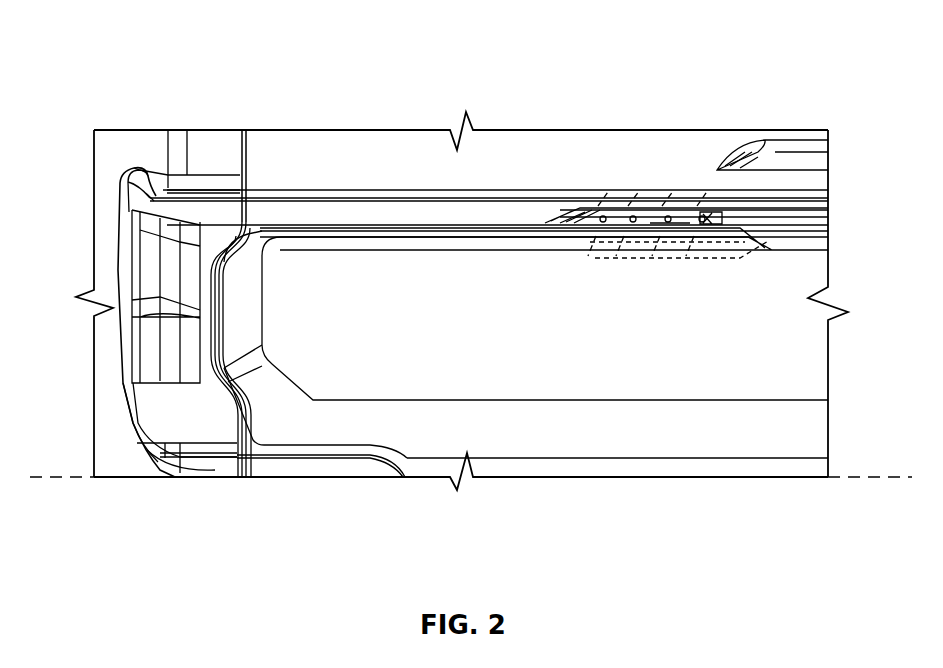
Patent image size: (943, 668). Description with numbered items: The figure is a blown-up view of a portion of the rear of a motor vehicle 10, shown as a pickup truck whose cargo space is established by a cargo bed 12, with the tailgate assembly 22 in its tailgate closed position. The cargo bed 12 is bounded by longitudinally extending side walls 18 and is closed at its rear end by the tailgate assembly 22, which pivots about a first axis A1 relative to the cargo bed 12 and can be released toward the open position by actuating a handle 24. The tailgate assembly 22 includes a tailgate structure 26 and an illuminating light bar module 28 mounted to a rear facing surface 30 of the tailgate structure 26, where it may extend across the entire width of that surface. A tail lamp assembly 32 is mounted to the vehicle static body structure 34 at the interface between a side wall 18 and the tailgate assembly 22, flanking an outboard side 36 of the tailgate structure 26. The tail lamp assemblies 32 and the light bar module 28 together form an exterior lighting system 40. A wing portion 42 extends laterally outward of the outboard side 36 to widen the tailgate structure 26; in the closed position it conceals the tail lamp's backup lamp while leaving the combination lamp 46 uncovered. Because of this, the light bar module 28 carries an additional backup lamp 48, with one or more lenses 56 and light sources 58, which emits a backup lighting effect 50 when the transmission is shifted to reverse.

The motor vehicle 10 is at (778, 80).
The cargo bed 12 is at (622, 115).
The side walls 18 is at (160, 140).
The tailgate assembly 22 is at (429, 431).
The handle 24 is at (802, 160).
The tailgate structure 26 is at (462, 337).
The illuminating light bar module 28 is at (371, 212).
The rear facing surface 30 is at (635, 355).
The tail lamp assembly 32 is at (113, 228).
The vehicle static body structure 34 is at (92, 352).
The outboard side 36 is at (231, 428).
The exterior lighting system 40 is at (252, 160).
The wing portion 42 is at (240, 328).
The combination lamp 46 is at (165, 283).
The backup lamp 48 is at (657, 217).
The backup lighting effect 50 is at (595, 190).
The lens 56 is at (717, 215).
The light source 58 is at (603, 222).
The first axis A1 is at (43, 479).